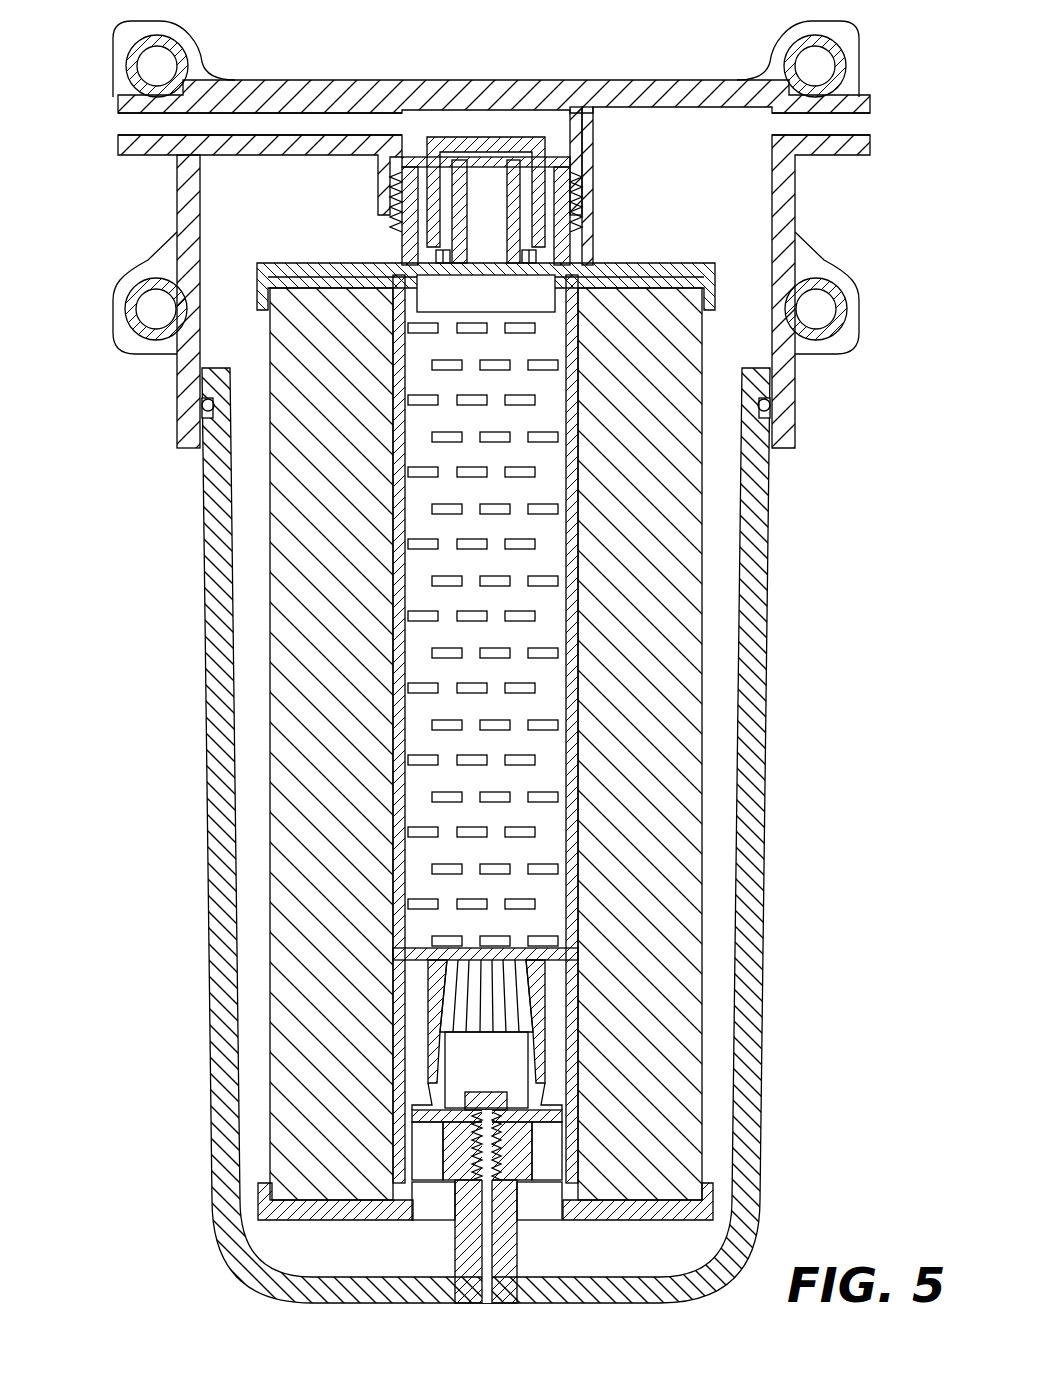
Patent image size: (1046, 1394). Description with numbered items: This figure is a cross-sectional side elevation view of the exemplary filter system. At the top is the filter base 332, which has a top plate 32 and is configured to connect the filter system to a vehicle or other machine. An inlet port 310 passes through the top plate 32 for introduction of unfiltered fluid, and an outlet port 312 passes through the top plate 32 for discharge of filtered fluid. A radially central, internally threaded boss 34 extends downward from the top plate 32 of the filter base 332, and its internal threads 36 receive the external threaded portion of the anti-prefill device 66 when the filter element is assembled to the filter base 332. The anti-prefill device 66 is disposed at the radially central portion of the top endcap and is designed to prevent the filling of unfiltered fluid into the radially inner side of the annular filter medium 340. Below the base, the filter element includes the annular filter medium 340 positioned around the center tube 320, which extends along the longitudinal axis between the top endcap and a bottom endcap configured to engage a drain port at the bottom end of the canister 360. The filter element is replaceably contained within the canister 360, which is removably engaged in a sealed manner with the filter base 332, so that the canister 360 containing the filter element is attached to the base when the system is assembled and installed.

The top plate 32 is at (640, 90).
The filter base 332 is at (355, 78).
The internally threaded boss 34 is at (583, 112).
The internal threads 36 is at (578, 188).
The anti-prefill device 66 is at (476, 124).
The inlet port 310 is at (836, 124).
The outlet port 312 is at (160, 124).
The center tube 320 is at (578, 488).
The annular filter medium 340 is at (665, 897).
The canister 360 is at (762, 795).